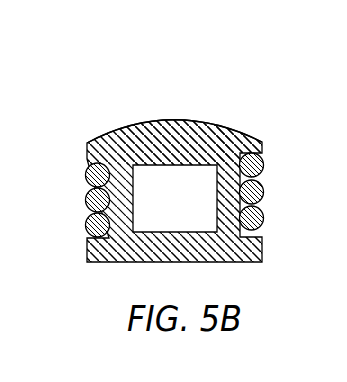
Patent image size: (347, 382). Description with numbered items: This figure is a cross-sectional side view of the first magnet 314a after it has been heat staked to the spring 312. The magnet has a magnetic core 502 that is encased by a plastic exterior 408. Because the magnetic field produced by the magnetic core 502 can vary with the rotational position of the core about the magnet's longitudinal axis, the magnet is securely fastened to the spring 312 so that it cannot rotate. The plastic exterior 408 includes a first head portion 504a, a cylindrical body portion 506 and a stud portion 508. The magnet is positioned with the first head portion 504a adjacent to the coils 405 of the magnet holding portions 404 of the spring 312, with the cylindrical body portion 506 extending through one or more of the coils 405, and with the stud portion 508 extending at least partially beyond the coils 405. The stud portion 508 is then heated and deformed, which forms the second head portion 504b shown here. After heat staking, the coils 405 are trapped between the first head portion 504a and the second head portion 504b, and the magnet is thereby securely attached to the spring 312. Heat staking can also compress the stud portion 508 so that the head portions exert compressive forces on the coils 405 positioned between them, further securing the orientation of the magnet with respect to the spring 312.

The first magnet 314a is at (178, 149).
The stud portion 508 is at (162, 133).
The second head portion 504b is at (217, 133).
The magnetic core 502 is at (228, 140).
The spring 312 is at (236, 178).
The first head portion 504a is at (263, 252).
The magnet holding portions 404 is at (87, 173).
The cylindrical body portion 506 is at (86, 200).
The coils 405 is at (87, 227).
The plastic exterior 408 is at (264, 218).